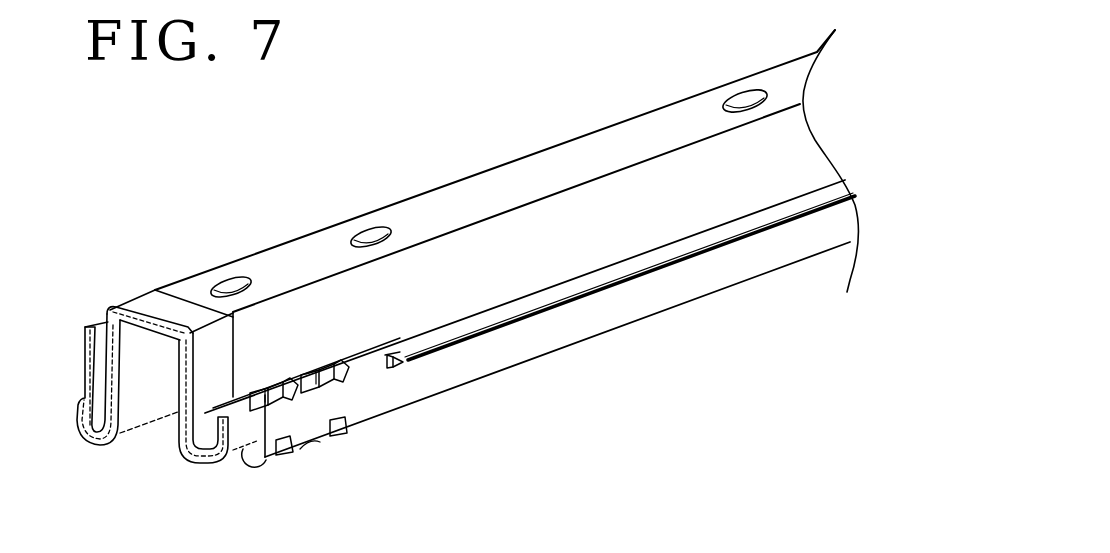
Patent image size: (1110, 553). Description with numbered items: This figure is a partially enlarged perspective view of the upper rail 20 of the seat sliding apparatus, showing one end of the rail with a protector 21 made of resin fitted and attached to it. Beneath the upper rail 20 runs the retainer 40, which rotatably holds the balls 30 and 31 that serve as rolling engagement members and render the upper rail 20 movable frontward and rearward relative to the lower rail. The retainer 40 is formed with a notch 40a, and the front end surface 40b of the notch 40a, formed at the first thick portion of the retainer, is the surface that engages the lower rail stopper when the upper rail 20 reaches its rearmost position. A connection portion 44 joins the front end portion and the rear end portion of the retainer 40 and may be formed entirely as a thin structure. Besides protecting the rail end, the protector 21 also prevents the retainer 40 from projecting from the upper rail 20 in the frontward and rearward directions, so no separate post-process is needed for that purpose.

The upper rail 20 is at (553, 130).
The protector 21 is at (167, 307).
The ball 30 is at (288, 373).
The ball 31 is at (280, 455).
The retainer 40 is at (614, 350).
The notch 40a is at (622, 277).
The front end surface 40b is at (407, 367).
The connection portion 44 is at (510, 348).